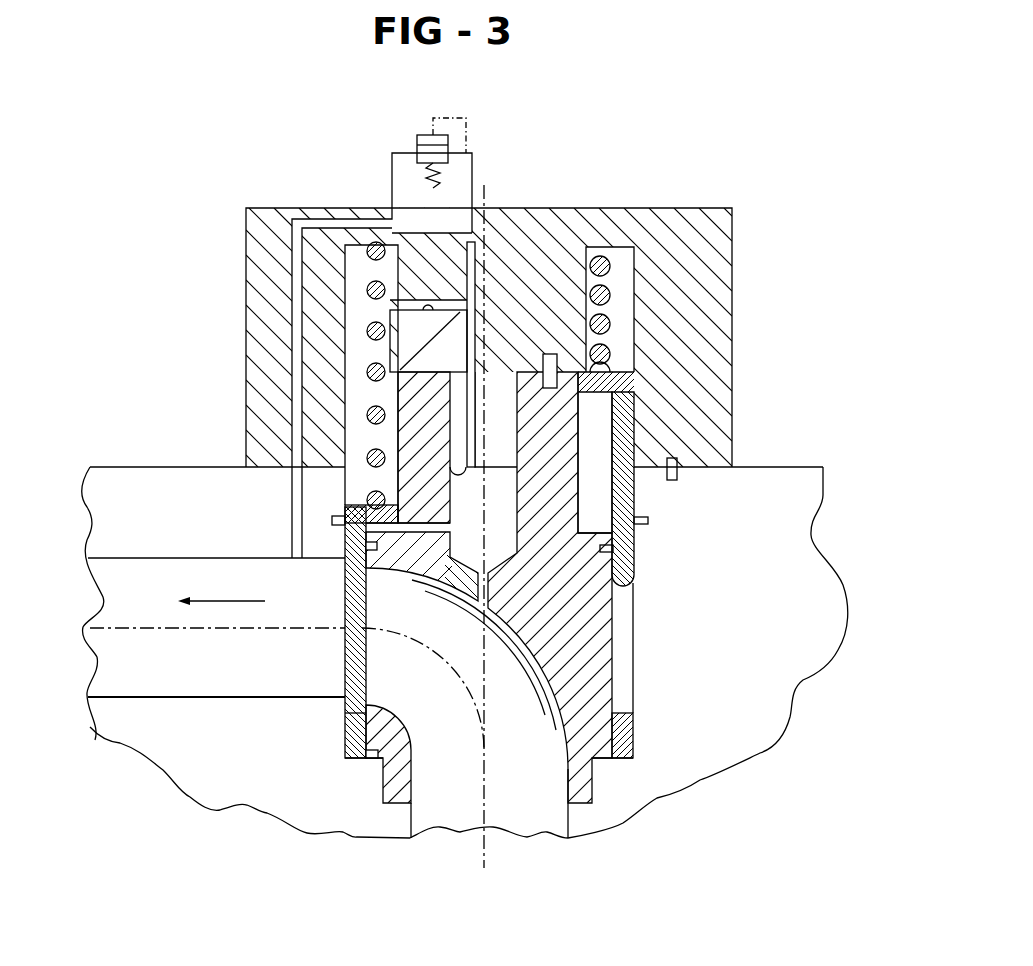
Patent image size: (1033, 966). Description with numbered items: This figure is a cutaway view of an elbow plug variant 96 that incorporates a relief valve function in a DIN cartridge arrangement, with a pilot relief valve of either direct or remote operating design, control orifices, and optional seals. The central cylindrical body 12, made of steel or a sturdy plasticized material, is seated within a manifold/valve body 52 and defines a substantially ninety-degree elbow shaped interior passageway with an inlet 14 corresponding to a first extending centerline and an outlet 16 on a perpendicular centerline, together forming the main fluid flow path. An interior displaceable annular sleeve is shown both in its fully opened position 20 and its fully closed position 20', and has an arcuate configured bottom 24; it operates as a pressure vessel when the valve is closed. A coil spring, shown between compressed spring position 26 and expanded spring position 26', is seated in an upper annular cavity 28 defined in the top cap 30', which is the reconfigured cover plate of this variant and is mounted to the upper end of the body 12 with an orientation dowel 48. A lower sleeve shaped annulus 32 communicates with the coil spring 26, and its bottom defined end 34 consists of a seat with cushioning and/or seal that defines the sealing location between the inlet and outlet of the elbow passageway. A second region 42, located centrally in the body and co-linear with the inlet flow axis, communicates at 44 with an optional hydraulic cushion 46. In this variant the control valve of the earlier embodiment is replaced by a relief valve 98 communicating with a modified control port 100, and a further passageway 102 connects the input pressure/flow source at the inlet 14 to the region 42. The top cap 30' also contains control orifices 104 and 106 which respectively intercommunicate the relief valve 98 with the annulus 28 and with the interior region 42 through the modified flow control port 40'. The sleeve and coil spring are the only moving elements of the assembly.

The central cylindrical body 12 is at (585, 637).
The inlet 14 is at (483, 842).
The outlet 16 is at (135, 628).
The sleeve 20 is at (647, 505).
The sleeve closed position 20' is at (310, 632).
The arcuate configured bottom 24 is at (634, 583).
The coil spring 26 is at (677, 309).
The expanded spring position 26' is at (285, 382).
The upper annular cavity 28 is at (620, 313).
The top cap 30' is at (456, 315).
The lower sleeve shaped annulus 32 is at (623, 674).
The bottom defined end 34 is at (625, 707).
The modified flow control port 40' is at (513, 325).
The second region 42 is at (514, 511).
The communication passage 44 is at (427, 530).
The hydraulic cushion 46 is at (345, 516).
The orientation dowel 48 is at (505, 380).
The manifold/valve body 52 is at (108, 500).
The elbow plug variant 96 is at (331, 158).
The relief valve 98 is at (425, 137).
The modified control port 100 is at (290, 243).
The further passageway 102 is at (478, 596).
The control orifice 104 is at (430, 303).
The control orifice 106 is at (549, 354).